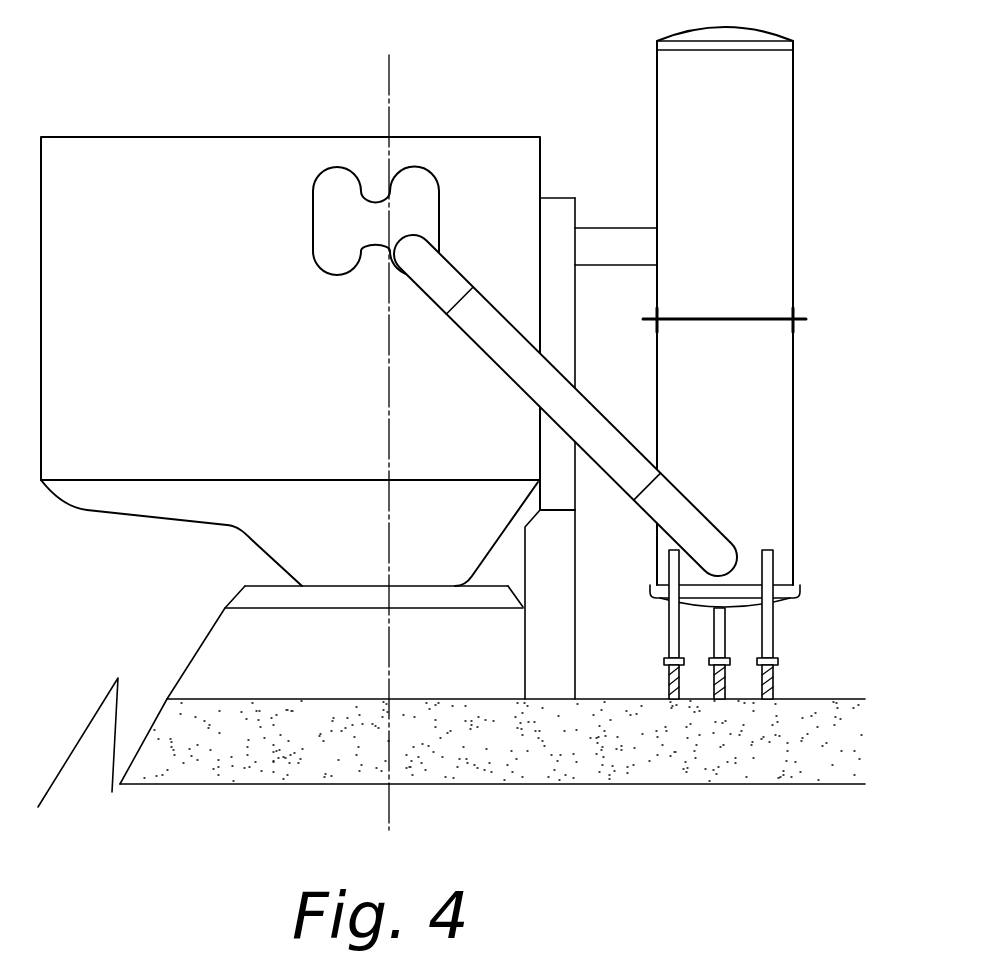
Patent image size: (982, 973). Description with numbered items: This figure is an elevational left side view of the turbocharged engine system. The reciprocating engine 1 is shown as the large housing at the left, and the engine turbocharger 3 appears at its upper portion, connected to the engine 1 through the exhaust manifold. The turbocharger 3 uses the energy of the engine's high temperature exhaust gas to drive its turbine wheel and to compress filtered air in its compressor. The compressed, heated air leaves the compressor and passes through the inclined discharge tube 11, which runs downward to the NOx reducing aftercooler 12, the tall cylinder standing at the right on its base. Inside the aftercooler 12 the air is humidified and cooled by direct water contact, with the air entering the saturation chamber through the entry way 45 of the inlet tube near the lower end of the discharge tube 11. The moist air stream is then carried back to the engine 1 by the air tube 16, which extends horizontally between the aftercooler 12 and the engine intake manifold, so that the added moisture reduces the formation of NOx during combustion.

The reciprocating engine 1 is at (287, 137).
The engine turbocharger 3 is at (315, 262).
The discharge tube 11 is at (505, 372).
The NOx reducing aftercooler 12 is at (793, 170).
The air tube 16 is at (600, 228).
The entry way 45 is at (722, 540).